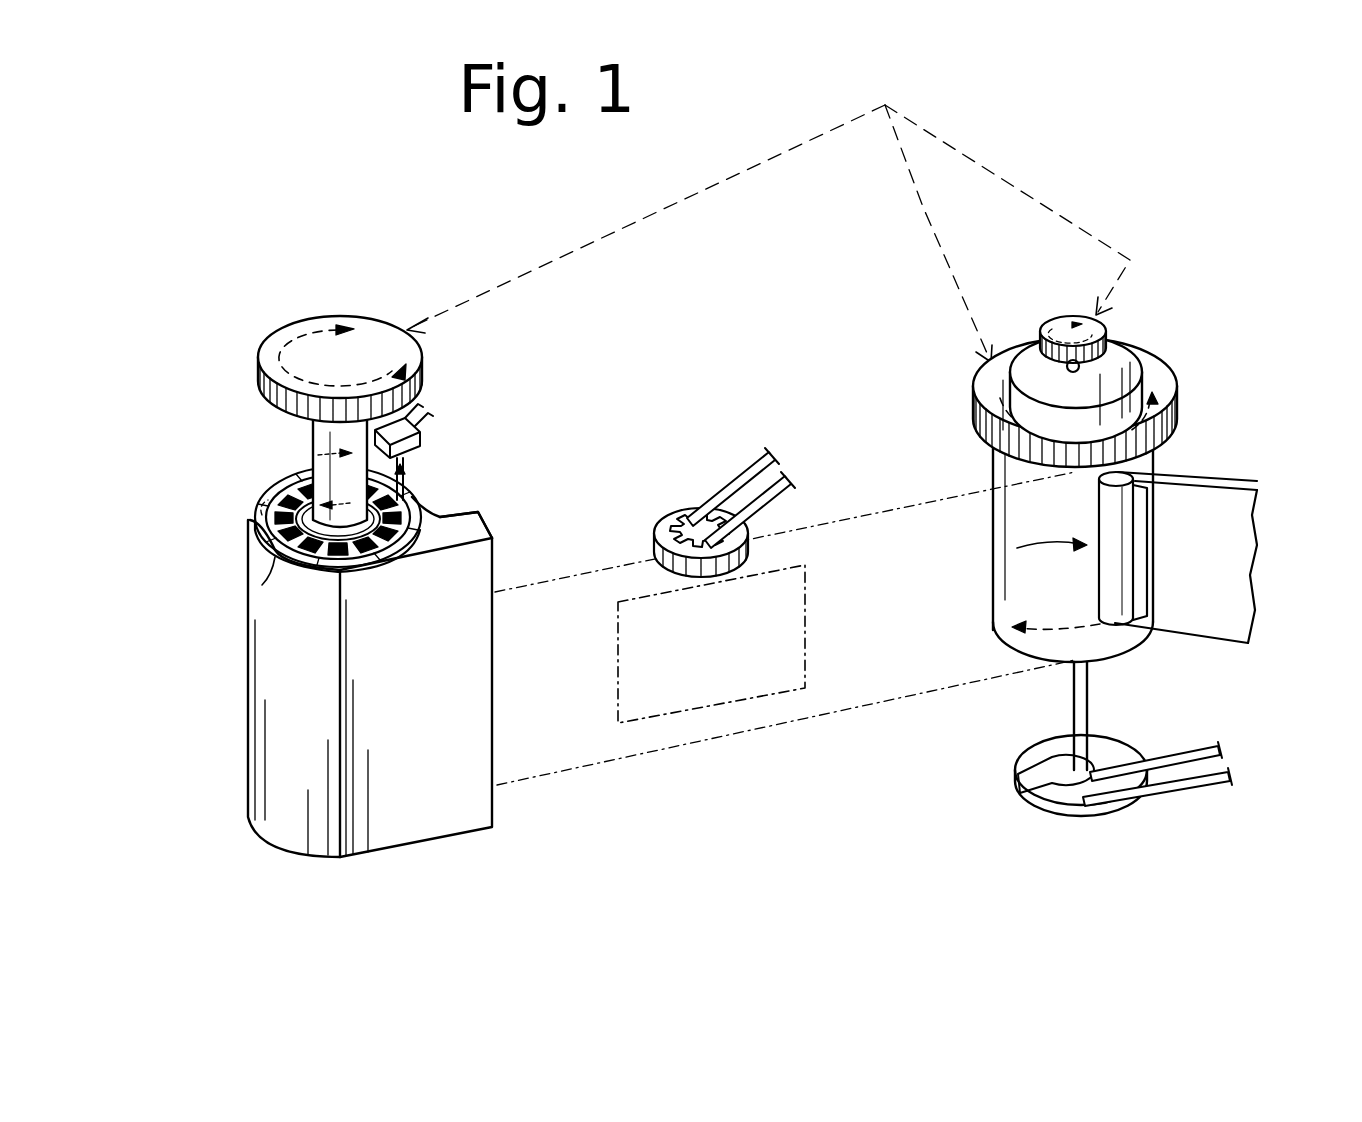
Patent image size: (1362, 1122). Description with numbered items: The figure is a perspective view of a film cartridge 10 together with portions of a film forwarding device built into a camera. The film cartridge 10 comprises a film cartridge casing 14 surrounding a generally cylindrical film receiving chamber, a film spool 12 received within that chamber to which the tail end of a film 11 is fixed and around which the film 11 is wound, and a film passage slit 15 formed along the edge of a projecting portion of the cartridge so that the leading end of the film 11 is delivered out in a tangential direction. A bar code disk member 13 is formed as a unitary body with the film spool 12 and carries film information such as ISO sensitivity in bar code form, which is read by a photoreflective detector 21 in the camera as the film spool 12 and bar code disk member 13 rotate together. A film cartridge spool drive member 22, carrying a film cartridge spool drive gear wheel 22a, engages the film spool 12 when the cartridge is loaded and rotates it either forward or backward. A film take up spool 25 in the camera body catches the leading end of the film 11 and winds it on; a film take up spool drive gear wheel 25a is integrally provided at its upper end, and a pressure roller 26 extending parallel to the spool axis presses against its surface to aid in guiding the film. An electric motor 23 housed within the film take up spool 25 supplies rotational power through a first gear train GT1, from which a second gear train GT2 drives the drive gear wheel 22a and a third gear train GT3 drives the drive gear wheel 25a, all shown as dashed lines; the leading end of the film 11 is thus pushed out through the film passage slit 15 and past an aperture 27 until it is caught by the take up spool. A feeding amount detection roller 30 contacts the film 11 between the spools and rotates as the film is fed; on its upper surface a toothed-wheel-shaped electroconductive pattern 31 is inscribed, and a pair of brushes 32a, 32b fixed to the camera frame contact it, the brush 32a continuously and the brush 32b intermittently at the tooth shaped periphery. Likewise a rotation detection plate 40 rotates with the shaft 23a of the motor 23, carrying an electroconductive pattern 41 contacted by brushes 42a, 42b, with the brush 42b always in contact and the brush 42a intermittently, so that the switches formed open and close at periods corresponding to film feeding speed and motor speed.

The film cartridge 10 is at (365, 566).
The film 11 is at (577, 737).
The film spool 12 is at (250, 503).
The bar code disk member 13 is at (262, 585).
The film cartridge casing 14 is at (470, 808).
The film passage slit 15 is at (493, 518).
The photoreflective detector 21 is at (410, 452).
The film cartridge spool drive member 22 is at (312, 423).
The film cartridge spool drive gear wheel 22a is at (362, 320).
The electric motor 23 is at (1120, 368).
The shaft 23a is at (1090, 703).
The film take up spool 25 is at (1013, 562).
The film take up spool drive gear wheel 25a is at (977, 377).
The pressure roller 26 is at (1127, 527).
The aperture 27 is at (735, 702).
The feeding amount detection roller 30 is at (646, 499).
The electroconductive pattern 31 is at (653, 547).
The brush 32a is at (778, 488).
The brush 32b is at (747, 472).
The rotation detection plate 40 is at (1025, 812).
The electroconductive pattern 41 is at (1067, 777).
The brush 42a is at (1223, 793).
The brush 42b is at (1200, 752).
The first gear train GT1 is at (1020, 187).
The second gear train GT2 is at (706, 190).
The third gear train GT3 is at (923, 222).